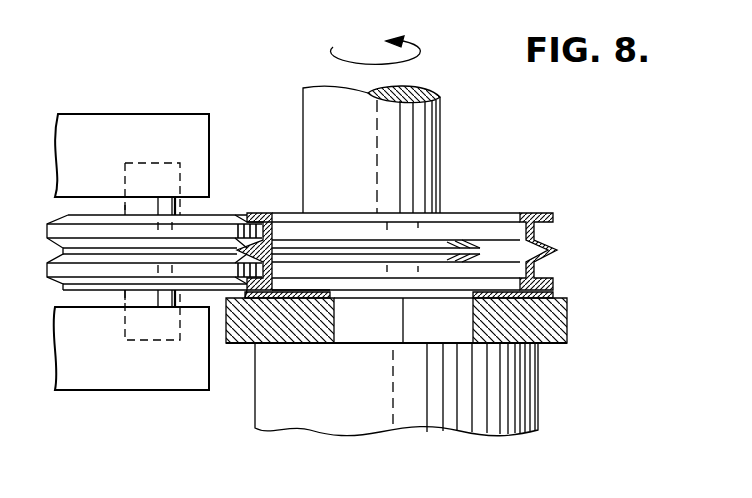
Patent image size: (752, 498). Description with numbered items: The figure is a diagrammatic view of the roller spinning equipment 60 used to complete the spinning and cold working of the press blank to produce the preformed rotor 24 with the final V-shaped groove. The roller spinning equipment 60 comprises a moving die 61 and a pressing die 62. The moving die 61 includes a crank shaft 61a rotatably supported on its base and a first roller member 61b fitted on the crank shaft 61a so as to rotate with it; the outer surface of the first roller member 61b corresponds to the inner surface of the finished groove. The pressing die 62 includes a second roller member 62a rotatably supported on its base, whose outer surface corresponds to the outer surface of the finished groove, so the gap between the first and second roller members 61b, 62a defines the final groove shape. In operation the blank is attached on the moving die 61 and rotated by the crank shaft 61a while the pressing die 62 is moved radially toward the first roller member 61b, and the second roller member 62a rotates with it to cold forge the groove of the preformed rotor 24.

The roller spinning equipment 60 is at (269, 88).
The moving die 61 is at (539, 397).
The crank shaft 61a is at (437, 137).
The first roller member 61b is at (470, 231).
The pressing die 62 is at (131, 111).
The second roller member 62a is at (234, 213).
The preformed rotor 24 is at (555, 249).